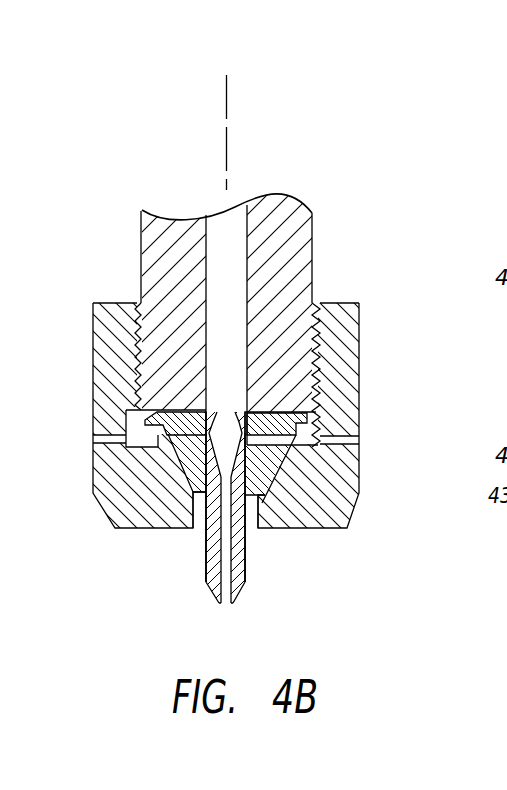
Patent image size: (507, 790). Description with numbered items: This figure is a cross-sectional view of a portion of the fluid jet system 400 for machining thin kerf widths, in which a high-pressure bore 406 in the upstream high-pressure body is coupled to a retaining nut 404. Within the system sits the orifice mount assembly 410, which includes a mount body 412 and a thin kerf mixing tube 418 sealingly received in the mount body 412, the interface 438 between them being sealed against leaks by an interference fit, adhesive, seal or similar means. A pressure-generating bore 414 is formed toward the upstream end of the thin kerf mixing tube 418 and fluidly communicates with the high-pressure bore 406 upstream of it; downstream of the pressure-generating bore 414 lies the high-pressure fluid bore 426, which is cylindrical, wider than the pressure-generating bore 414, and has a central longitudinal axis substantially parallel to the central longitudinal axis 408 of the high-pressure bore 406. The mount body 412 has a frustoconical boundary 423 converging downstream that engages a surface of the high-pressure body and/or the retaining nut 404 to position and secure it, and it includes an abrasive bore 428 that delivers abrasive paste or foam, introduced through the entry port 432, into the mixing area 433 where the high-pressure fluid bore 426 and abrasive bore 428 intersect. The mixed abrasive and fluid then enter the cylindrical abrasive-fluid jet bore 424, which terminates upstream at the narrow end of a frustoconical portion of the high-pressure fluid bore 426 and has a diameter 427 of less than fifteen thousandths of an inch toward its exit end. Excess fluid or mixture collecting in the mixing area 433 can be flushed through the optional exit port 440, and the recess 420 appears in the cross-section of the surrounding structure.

The fluid jet system 400 is at (345, 142).
The retaining nut 404 is at (336, 320).
The high-pressure bore 406 is at (234, 230).
The central longitudinal axis 408 is at (226, 129).
The orifice mount assembly 410 is at (170, 582).
The mount body 412 is at (208, 435).
The pressure-generating bore 414 is at (228, 408).
The thin kerf mixing tube 418 is at (248, 573).
The counterbore 420 is at (197, 500).
The frustoconical boundary 423 is at (284, 468).
The abrasive-fluid jet bore 424 is at (226, 606).
The high-pressure fluid bore 426 is at (249, 423).
The diameter 427 is at (168, 562).
The abrasive bore 428 is at (292, 438).
The entry port 432 is at (85, 440).
The mixing area 433 is at (143, 378).
The interface 438 is at (254, 480).
The exit port 440 is at (350, 440).